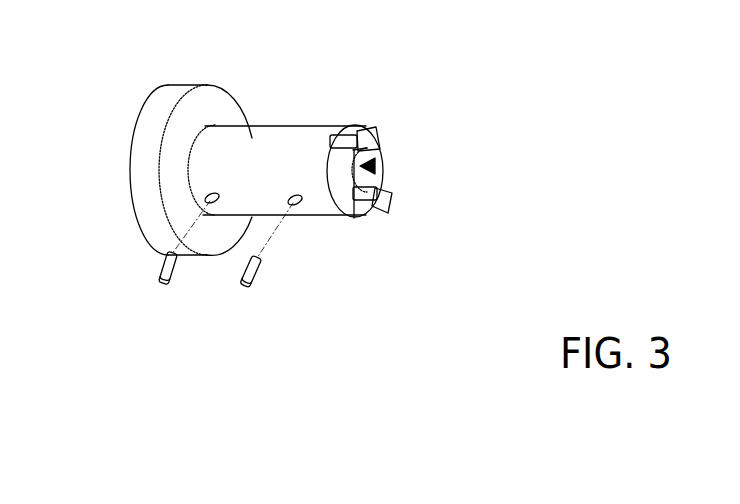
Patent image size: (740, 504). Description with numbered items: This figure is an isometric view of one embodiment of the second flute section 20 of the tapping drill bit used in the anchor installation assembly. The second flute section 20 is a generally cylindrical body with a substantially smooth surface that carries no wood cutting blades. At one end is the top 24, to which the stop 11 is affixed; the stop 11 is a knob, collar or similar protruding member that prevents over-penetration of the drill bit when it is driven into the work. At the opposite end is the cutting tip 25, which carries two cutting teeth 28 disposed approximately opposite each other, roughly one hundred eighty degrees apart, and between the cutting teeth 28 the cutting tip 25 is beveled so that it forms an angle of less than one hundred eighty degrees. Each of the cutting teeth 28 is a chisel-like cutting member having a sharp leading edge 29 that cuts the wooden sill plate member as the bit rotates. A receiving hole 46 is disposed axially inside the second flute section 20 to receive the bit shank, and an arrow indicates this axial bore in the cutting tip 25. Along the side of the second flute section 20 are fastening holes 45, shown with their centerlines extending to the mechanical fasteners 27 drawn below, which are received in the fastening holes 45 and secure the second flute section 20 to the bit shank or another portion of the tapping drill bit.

The stop 11 is at (157, 118).
The second flute section 20 is at (283, 126).
The top 24 is at (192, 170).
The cutting tip 25 is at (354, 218).
The mechanical fasteners 27 is at (170, 278).
The cutting teeth 28 is at (348, 135).
The sharp leading edge 29 is at (363, 137).
The fastening holes 45 is at (291, 196).
The receiving hole 46 is at (375, 165).